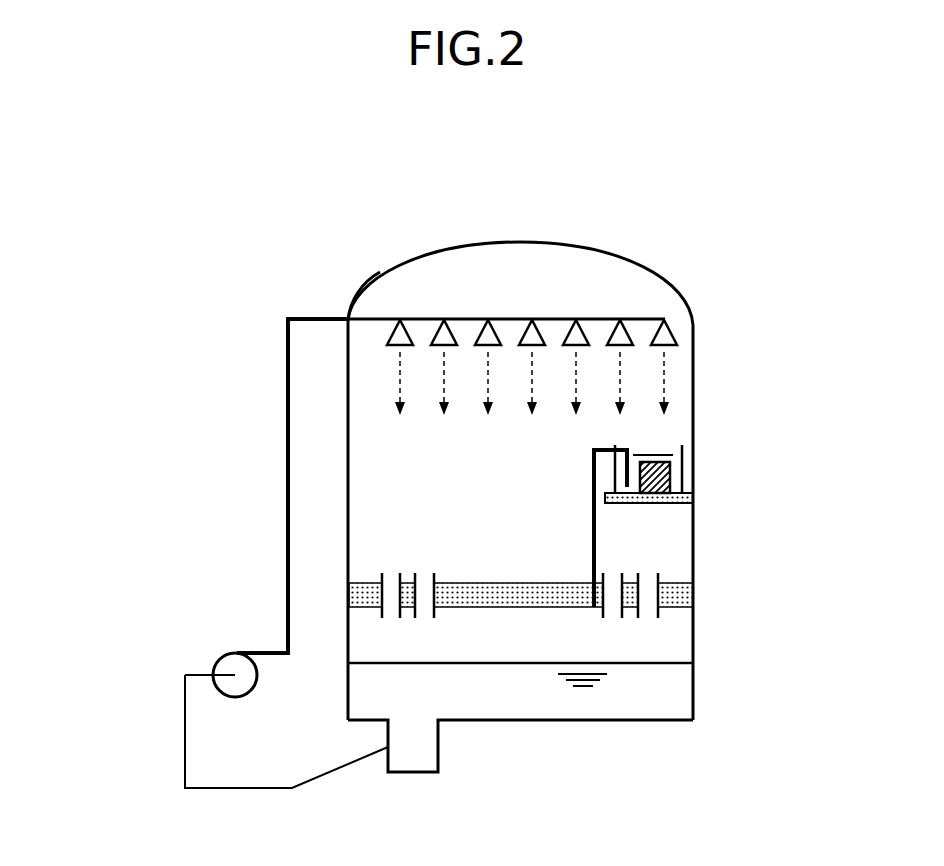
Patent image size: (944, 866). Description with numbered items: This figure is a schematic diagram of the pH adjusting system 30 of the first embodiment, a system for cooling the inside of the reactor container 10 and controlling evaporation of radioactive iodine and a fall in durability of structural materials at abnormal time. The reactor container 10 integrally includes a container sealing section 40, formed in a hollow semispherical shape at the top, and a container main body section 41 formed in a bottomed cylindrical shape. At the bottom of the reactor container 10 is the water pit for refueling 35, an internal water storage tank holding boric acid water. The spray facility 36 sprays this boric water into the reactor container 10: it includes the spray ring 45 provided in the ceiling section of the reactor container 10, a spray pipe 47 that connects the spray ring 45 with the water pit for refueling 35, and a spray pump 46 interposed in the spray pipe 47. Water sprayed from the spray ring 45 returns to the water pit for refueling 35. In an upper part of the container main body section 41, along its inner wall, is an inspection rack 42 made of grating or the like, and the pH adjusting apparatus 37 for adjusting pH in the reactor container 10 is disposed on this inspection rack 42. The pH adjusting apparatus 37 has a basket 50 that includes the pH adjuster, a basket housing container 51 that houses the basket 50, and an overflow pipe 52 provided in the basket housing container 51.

The reactor container 10 is at (508, 242).
The pH adjusting system 30 is at (709, 361).
The water pit for refueling 35 is at (645, 702).
The spray facility 36 is at (357, 524).
The pH adjusting apparatus 37 is at (749, 435).
The container sealing section 40 is at (380, 272).
The container main body section 41 is at (348, 437).
The inspection rack 42 is at (672, 502).
The spray ring 45 is at (512, 337).
The spray pump 46 is at (216, 664).
The spray pipe 47 is at (287, 468).
The basket 50 is at (648, 480).
The basket housing container 51 is at (684, 470).
The overflow pipe 52 is at (594, 540).